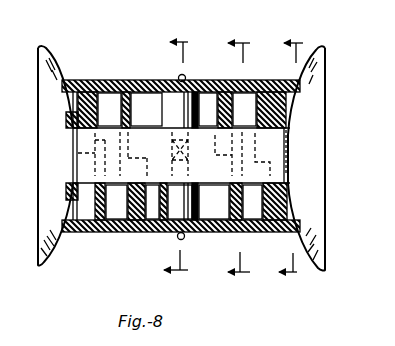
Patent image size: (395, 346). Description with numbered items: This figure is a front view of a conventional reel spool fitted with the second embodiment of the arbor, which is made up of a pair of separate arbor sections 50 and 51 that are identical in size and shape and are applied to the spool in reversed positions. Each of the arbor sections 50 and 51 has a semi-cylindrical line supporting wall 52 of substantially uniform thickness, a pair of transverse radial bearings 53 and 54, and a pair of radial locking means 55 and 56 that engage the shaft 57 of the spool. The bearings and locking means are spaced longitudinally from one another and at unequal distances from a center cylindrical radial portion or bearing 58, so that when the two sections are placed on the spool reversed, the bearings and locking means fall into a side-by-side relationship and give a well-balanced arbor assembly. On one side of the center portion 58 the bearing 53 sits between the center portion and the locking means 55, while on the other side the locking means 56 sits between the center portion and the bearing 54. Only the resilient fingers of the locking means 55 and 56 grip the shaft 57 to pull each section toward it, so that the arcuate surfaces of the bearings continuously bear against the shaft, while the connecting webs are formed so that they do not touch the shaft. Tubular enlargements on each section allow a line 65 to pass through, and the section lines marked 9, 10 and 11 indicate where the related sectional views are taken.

The arbor section 50 is at (78, 72).
The arbor section 51 is at (72, 240).
The semi-cylindrical line supporting wall 52 is at (72, 102).
The transverse radial bearing 53 is at (227, 60).
The transverse radial bearing 54 is at (97, 97).
The radial locking means 55 is at (267, 113).
The radial locking means 56 is at (122, 110).
The shaft 57 is at (275, 147).
The center cylindrical radial portion 58 is at (173, 108).
The line 65 is at (181, 75).
The section line 9- 9 is at (176, 156).
The section line 10- 10 is at (240, 157).
The section line 11- 11 is at (295, 158).